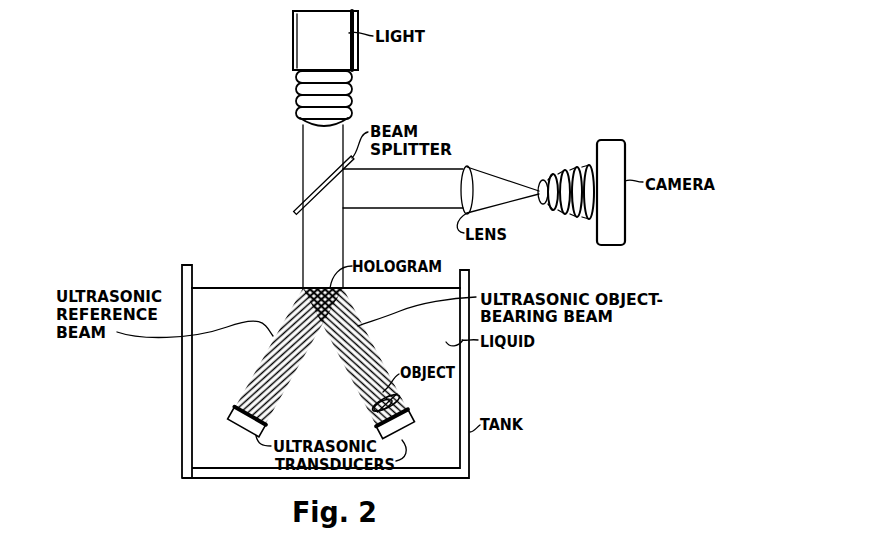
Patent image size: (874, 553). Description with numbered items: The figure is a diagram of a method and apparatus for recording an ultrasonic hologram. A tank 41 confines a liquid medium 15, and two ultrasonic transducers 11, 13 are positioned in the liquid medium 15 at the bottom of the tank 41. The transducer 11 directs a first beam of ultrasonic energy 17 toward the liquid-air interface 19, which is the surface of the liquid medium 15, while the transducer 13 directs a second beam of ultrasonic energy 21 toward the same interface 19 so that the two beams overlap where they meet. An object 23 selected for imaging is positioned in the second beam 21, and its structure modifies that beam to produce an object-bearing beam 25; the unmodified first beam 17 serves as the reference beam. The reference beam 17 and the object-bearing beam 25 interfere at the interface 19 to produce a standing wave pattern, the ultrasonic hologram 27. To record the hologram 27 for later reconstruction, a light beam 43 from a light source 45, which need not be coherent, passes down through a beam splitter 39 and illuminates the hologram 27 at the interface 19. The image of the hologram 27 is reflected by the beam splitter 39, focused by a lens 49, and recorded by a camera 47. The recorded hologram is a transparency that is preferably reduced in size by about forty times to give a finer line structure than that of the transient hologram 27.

The ultrasonic transducer 11 is at (230, 424).
The ultrasonic transducer 13 is at (411, 423).
The liquid medium 15 is at (447, 356).
The first beam of ultrasonic energy 17 is at (250, 380).
The liquid-air interface 19 is at (236, 288).
The second beam of ultrasonic energy 21 is at (405, 409).
The object 23 is at (403, 394).
The object-bearing beam 25 is at (376, 361).
The hologram 27 is at (318, 288).
The beam splitter 39 is at (296, 211).
The tank 41 is at (470, 404).
The light beam 43 is at (303, 150).
The light source 45 is at (300, 48).
The camera 47 is at (600, 140).
The lens 49 is at (467, 168).